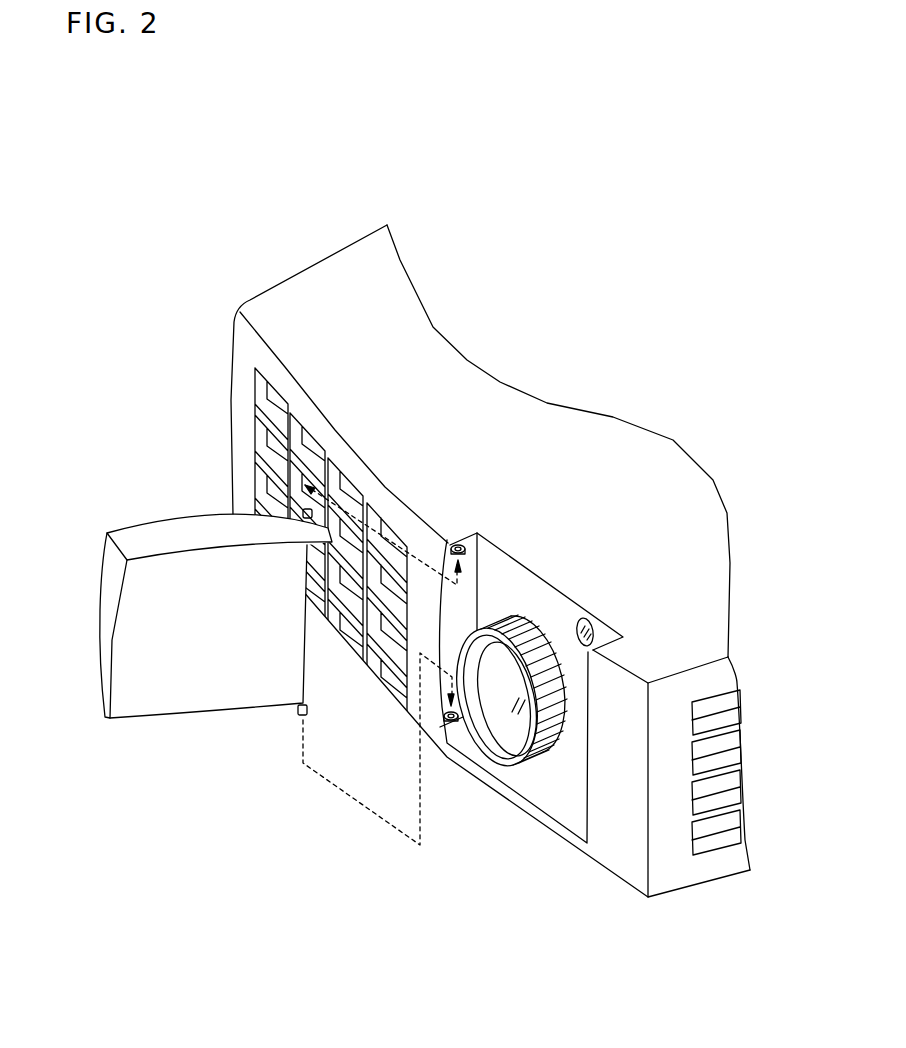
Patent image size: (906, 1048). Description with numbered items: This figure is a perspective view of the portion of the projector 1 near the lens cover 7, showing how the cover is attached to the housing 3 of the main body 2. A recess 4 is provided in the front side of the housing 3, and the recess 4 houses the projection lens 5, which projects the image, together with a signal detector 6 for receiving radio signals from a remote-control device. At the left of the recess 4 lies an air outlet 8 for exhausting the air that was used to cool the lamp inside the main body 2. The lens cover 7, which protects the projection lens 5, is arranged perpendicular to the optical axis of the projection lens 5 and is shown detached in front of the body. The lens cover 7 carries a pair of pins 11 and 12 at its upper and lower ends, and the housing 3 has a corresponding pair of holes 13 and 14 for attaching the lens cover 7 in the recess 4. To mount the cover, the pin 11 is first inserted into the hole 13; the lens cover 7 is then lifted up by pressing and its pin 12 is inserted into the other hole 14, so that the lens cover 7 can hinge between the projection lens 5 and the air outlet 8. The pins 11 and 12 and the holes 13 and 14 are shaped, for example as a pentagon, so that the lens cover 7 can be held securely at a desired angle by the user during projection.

The projector 1 is at (559, 183).
The main body 2 is at (344, 243).
The housing 3 is at (285, 292).
The recess 4 is at (527, 790).
The projection lens 5 is at (556, 742).
The signal detector 6 is at (596, 620).
The lens cover 7 is at (115, 638).
The air outlet 8 is at (260, 390).
The pin 11 is at (260, 507).
The pin 12 is at (300, 710).
The hole 13 is at (459, 543).
The hole 14 is at (452, 730).